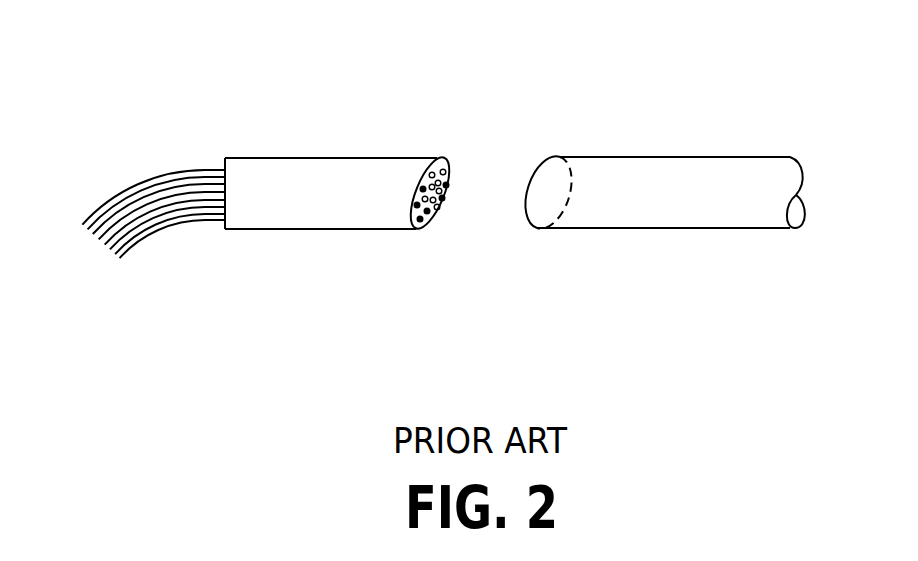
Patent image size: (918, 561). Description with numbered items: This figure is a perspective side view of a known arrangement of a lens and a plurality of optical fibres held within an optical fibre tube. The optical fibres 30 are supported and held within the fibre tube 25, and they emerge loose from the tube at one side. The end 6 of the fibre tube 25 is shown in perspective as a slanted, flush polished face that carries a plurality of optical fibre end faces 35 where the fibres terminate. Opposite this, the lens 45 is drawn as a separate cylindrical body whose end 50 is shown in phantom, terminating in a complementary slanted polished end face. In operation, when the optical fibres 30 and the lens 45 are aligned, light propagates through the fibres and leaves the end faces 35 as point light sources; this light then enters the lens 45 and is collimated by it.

The fibre tube 25 is at (333, 195).
The end of the fibre tube 6 is at (452, 172).
The optical fibre end faces 35 is at (422, 210).
The optical fibres 30 is at (167, 168).
The lens 45 is at (707, 213).
The end of the lens 50 is at (550, 192).